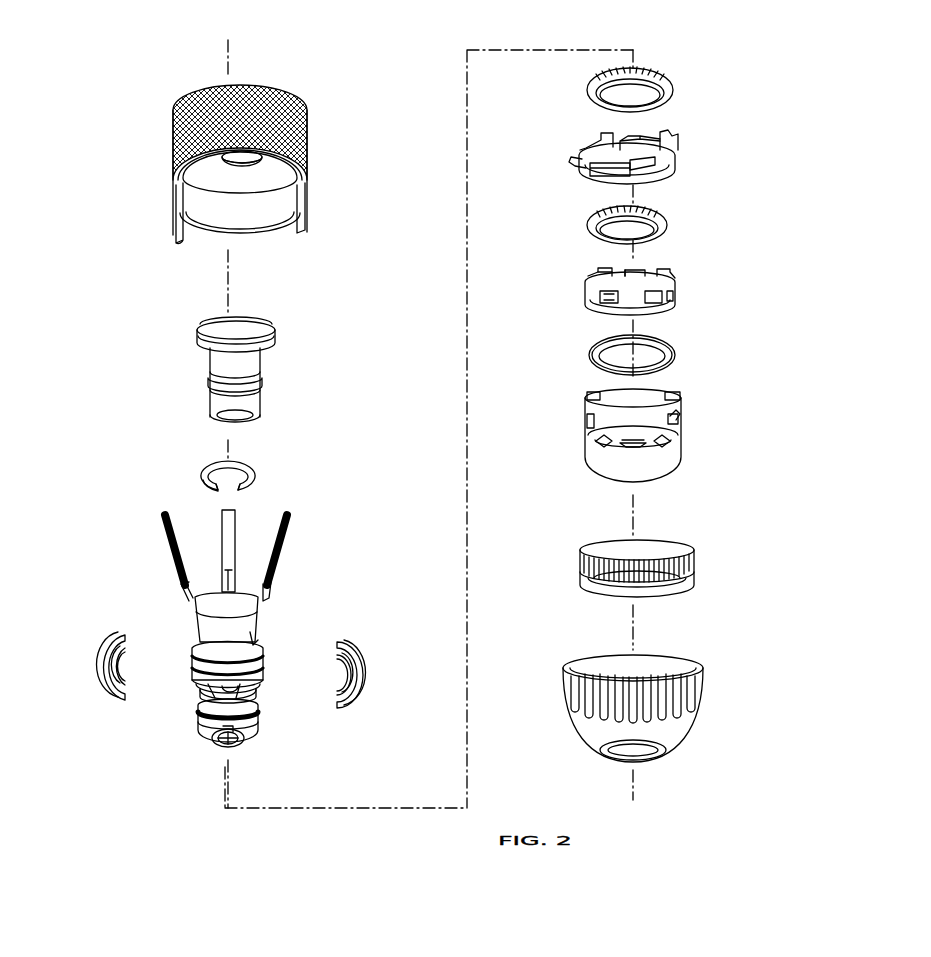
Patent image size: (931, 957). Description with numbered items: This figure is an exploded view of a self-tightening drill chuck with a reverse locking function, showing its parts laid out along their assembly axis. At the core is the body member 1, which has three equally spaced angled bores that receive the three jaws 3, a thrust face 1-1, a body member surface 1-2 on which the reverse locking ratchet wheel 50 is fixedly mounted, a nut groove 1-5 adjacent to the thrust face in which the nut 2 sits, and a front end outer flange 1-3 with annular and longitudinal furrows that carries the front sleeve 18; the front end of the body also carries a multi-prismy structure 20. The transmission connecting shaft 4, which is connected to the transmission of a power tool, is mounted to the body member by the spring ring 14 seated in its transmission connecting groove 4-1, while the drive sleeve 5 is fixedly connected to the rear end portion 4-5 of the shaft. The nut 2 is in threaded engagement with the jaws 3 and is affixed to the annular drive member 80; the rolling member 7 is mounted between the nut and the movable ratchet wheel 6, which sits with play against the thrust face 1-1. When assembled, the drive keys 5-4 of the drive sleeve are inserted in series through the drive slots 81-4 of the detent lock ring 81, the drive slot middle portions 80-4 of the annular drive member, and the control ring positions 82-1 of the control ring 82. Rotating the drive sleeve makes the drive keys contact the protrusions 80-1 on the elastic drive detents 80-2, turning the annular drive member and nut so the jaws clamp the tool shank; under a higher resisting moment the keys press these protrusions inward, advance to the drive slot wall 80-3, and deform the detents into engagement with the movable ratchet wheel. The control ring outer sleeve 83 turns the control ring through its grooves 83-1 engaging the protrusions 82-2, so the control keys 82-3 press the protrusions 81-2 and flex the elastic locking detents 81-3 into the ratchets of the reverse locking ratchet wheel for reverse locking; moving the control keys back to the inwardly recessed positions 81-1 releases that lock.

The body member 1 is at (233, 618).
The thrust face 1-1 is at (265, 685).
The body member surface 1-2 is at (258, 655).
The front end outer flange 1-3 is at (257, 718).
The nut groove 1-5 is at (218, 690).
The nut 2 is at (383, 682).
The jaws 3 is at (290, 530).
The transmission connecting shaft 4 is at (267, 337).
The transmission connecting groove 4-1 is at (257, 372).
The rear end portion 4-5 is at (262, 325).
The drive sleeve 5 is at (308, 145).
The drive keys 5-4 is at (305, 208).
The movable ratchet wheel 6 is at (667, 223).
The rolling member 7 is at (675, 357).
The spring ring 14 is at (252, 468).
The front sleeve 18 is at (687, 693).
The multi-prismy structure 20 is at (208, 743).
The reverse locking ratchet wheel 50 is at (667, 100).
The annular drive member 80 is at (657, 465).
The protrusions on the elastic drive detents 80-1 is at (678, 415).
The elastic drive detents 80-2 is at (680, 423).
The drive slot wall 80-3 is at (597, 395).
The drive slot middle portions 80-4 is at (587, 433).
The detent lock ring 81 is at (663, 180).
The inwardly recessed positions 81-1 is at (590, 167).
The protrusions on the elastic locking detents 81-2 is at (605, 173).
The elastic locking detents 81-3 is at (622, 168).
The drive slots 81-4 is at (583, 142).
The control ring 82 is at (665, 295).
The control ring positions 82-1 is at (672, 282).
The protrusions 82-2 is at (665, 298).
The control keys 82-3 is at (630, 292).
The control ring outer sleeve 83 is at (692, 568).
The grooves 83-1 is at (688, 585).